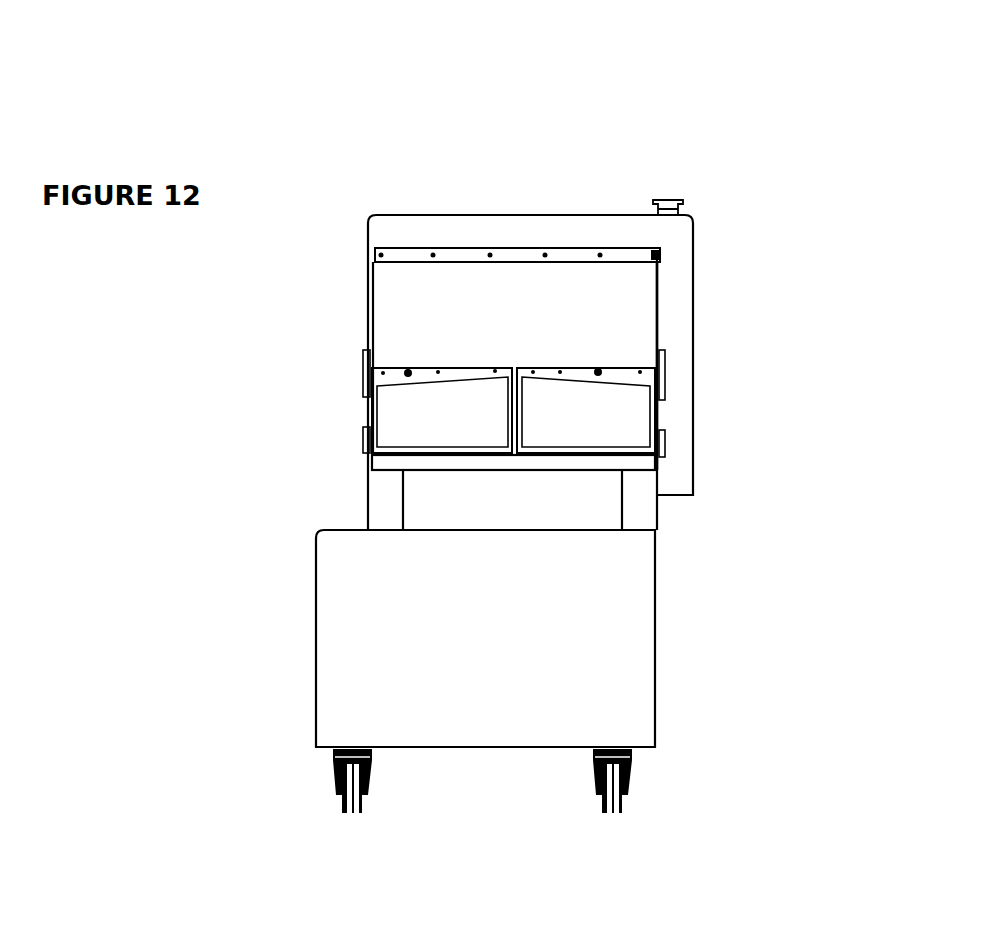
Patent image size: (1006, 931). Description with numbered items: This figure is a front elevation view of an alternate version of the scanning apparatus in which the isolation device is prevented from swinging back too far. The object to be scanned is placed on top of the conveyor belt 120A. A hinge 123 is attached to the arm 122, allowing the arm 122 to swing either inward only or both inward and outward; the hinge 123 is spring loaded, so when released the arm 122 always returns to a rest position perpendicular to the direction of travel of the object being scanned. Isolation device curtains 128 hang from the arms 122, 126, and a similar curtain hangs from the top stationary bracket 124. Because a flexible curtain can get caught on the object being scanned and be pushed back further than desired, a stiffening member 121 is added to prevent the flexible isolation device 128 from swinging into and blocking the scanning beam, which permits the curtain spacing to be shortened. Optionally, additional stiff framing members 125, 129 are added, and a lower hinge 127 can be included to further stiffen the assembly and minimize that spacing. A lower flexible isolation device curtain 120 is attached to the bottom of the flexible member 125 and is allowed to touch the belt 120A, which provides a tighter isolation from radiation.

The lower flexible isolation device curtain 120 is at (575, 462).
The conveyor belt 120A is at (542, 472).
The stiffening member 121 is at (530, 417).
The arm 122 is at (600, 372).
The hinge 123 is at (662, 373).
The top stationary bracket 124 is at (660, 252).
The stiff framing member 125 is at (638, 457).
The arm 126 is at (408, 373).
The lower hinge 127 is at (660, 445).
The isolation device curtain 128 is at (582, 412).
The stiff framing member 129 is at (660, 420).